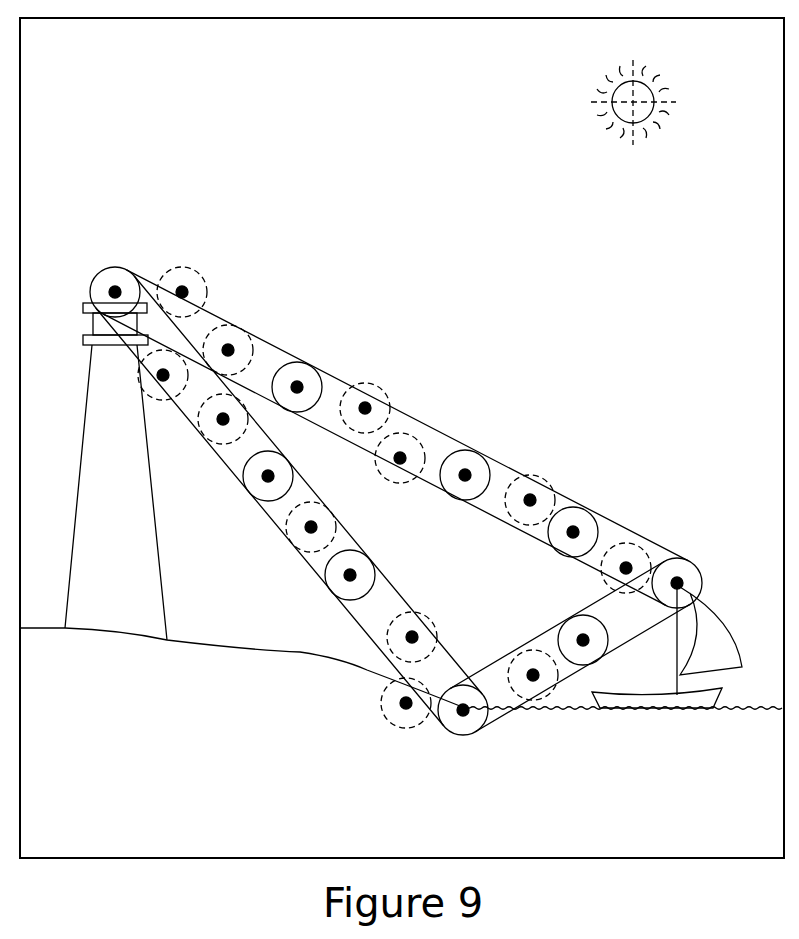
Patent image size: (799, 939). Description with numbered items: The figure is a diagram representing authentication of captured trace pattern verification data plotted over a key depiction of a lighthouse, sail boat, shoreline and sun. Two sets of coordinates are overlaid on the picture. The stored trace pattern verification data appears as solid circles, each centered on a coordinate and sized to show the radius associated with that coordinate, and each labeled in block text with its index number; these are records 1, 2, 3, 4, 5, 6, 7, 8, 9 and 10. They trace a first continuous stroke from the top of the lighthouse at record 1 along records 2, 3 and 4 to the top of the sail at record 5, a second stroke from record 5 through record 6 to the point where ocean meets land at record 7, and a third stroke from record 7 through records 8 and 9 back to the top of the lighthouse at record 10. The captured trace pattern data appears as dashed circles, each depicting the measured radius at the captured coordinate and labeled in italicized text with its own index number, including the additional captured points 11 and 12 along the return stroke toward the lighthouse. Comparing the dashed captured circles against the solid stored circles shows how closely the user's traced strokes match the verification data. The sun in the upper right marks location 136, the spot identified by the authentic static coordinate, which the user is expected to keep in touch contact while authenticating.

The record 1 is at (118, 288).
The record 2 is at (232, 349).
The record 3 is at (368, 407).
The record 4 is at (402, 460).
The record 5 is at (533, 499).
The record 6 is at (628, 566).
The record 7 is at (463, 714).
The record 8 is at (353, 574).
The record 9 is at (271, 475).
The record 10 is at (95, 298).
The eleventh wheel position 11 is at (221, 422).
The twelfth wheel position 12 is at (160, 380).
The location 136 is at (630, 104).